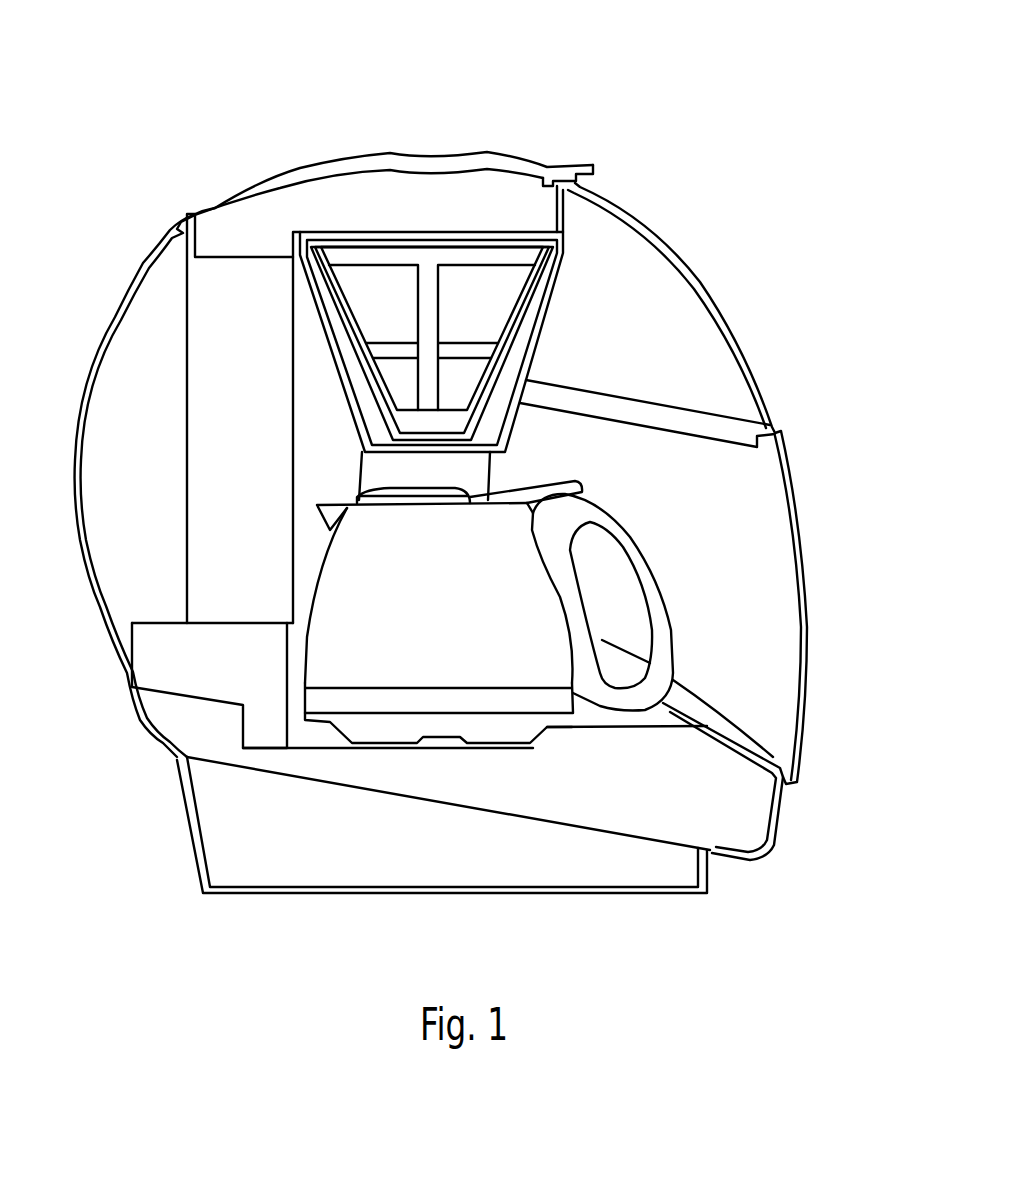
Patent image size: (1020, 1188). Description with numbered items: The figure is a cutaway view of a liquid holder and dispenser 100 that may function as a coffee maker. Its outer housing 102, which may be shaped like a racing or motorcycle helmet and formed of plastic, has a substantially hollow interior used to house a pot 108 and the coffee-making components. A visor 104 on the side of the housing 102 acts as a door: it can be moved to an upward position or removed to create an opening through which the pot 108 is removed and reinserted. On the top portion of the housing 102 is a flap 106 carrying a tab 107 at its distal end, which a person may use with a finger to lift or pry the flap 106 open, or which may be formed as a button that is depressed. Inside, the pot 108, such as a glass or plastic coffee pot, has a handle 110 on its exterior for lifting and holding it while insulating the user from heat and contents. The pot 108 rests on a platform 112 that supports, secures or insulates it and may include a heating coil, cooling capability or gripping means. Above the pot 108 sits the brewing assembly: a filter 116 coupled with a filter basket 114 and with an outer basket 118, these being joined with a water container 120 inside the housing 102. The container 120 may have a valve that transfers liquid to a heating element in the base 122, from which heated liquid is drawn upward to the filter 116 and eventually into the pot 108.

The liquid holder and dispenser 100 is at (745, 80).
The housing 102 is at (100, 323).
The visor 104 is at (806, 515).
The flap 106 is at (495, 150).
The tab 107 is at (588, 163).
The pot 108 is at (353, 593).
The handle 110 is at (593, 697).
The platform 112 is at (392, 720).
The filter basket 114 is at (477, 303).
The filter 116 is at (527, 306).
The outer basket 118 is at (511, 371).
The water container 120 is at (218, 462).
The base 122 is at (158, 660).